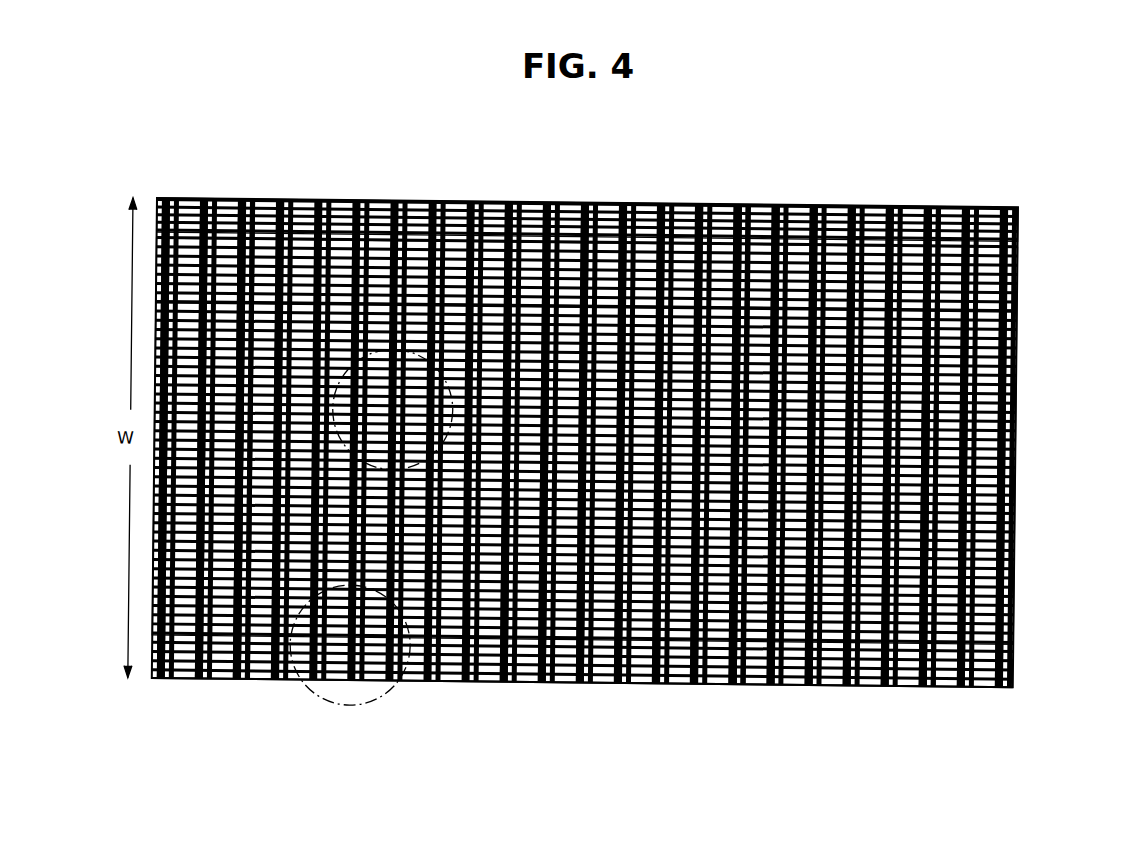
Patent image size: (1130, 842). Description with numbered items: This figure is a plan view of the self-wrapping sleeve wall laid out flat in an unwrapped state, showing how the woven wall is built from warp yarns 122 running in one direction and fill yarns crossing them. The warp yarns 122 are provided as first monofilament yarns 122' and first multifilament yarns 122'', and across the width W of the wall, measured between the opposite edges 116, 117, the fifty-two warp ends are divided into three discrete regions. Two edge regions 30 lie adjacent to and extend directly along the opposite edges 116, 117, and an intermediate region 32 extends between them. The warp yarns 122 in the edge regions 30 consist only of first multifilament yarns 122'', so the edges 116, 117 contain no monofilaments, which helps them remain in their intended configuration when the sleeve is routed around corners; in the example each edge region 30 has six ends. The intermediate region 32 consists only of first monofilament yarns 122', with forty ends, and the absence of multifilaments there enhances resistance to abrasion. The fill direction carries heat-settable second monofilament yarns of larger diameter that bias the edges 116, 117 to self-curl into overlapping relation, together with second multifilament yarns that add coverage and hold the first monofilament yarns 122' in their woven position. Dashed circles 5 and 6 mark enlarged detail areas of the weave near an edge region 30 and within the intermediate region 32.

The detail region shown in FIG. 5 is at (410, 690).
The detail region shown in FIG. 6 is at (398, 347).
The edge region 30 is at (1032, 640).
The intermediate region 32 is at (1032, 238).
The edge 116 is at (326, 198).
The edge 117 is at (472, 680).
The warp yarns 122 is at (538, 442).
The first monofilament yarns 122' is at (622, 441).
The first multifilament yarns 122'' is at (624, 220).